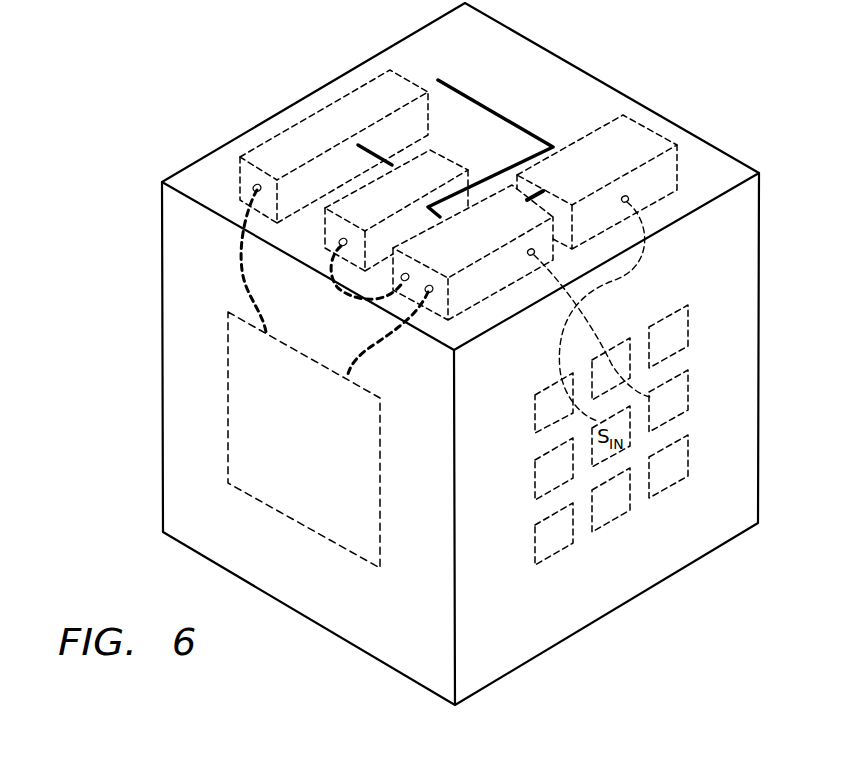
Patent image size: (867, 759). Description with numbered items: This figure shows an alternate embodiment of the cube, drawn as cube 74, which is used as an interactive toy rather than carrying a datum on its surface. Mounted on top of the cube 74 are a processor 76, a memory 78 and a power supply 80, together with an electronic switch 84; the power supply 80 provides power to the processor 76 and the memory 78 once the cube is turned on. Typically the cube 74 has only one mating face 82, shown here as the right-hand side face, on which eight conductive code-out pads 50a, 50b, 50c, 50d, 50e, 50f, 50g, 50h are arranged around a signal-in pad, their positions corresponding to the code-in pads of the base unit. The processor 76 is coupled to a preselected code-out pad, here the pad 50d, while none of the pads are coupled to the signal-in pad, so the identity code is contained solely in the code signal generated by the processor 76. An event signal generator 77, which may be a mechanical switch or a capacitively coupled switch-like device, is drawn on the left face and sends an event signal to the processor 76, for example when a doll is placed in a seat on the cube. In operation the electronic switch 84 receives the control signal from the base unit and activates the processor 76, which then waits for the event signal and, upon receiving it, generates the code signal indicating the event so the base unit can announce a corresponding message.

The cube 74 is at (588, 73).
The mating face 82 is at (708, 70).
The power supply 80 is at (408, 86).
The memory 78 is at (437, 152).
The processor 76 is at (500, 188).
The electronic switch 84 is at (580, 139).
The event signal generator 77 is at (300, 524).
The code-out pad 50a is at (535, 415).
The code-out pad 50b is at (608, 352).
The code-out pad 50c is at (688, 330).
The code-out pad 50d is at (688, 395).
The code-out pad 50e is at (668, 494).
The code-out pad 50f is at (607, 527).
The code-out pad 50g is at (535, 553).
The code-out pad 50h is at (535, 485).